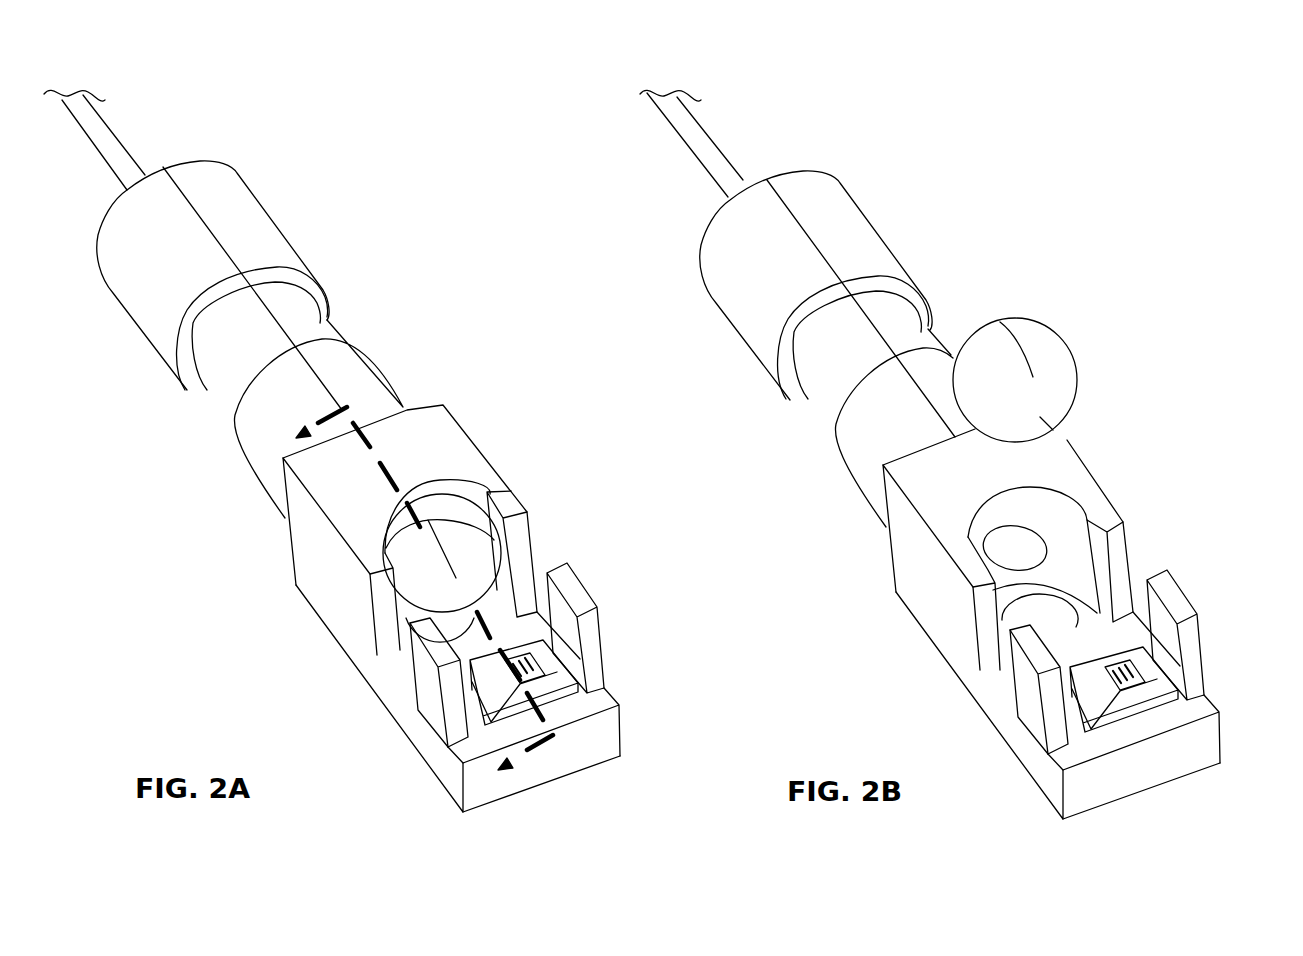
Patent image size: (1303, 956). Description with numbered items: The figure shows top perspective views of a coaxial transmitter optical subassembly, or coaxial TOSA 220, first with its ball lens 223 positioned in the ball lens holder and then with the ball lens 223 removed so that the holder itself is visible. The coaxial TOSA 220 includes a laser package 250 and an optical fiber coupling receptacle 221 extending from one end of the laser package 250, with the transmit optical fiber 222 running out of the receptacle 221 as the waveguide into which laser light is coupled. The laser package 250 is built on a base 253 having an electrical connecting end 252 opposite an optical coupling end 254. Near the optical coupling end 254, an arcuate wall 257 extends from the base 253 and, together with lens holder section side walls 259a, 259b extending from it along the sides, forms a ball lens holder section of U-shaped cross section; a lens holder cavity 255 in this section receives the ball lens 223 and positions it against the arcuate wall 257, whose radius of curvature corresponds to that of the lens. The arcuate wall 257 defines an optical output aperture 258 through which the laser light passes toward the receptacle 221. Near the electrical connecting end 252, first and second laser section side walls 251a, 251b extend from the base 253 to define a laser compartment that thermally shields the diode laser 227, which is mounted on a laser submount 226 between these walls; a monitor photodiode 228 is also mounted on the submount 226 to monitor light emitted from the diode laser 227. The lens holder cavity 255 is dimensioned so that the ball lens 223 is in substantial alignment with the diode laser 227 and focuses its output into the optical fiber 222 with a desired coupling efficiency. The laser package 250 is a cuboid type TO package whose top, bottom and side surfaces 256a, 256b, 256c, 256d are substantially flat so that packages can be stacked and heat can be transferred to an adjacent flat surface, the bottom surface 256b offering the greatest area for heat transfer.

In FIG. 2A, the coaxial TOSA 220 is at (437, 222).
In FIG. 2B, the coaxial TOSA 220 is at (1046, 236).
In FIG. 2A, the optical fiber coupling receptacle 221 is at (292, 224).
In FIG. 2B, the optical fiber coupling receptacle 221 is at (839, 304).
In FIG. 2A, the transmit optical fiber 222 is at (112, 141).
In FIG. 2B, the transmit optical fiber 222 is at (717, 143).
In FIG. 2A, the ball lens 223 is at (474, 537).
In FIG. 2B, the ball lens 223 is at (1033, 341).
In FIG. 2A, the laser submount 226 is at (539, 695).
In FIG. 2B, the laser submount 226 is at (1167, 735).
In FIG. 2A, the diode laser 227 is at (498, 662).
In FIG. 2B, the diode laser 227 is at (1184, 670).
In FIG. 2A, the monitor photodiode 228 is at (540, 695).
In FIG. 2B, the monitor photodiode 228 is at (1166, 732).
In FIG. 2A, the laser package 250 is at (452, 620).
In FIG. 2B, the laser package 250 is at (1027, 642).
In FIG. 2A, the first laser section side wall 251a is at (422, 633).
In FIG. 2B, the first laser section side wall 251a is at (991, 689).
In FIG. 2A, the second laser section side wall 251b is at (570, 580).
In FIG. 2B, the second laser section side wall 251b is at (1195, 615).
In FIG. 2A, the electrical connecting end 252 is at (648, 763).
In FIG. 2B, the electrical connecting end 252 is at (1134, 775).
In FIG. 2A, the base 253 is at (430, 760).
In FIG. 2B, the base 253 is at (979, 719).
In FIG. 2A, the optical coupling end 254 is at (268, 562).
In FIG. 2B, the optical coupling end 254 is at (871, 528).
In FIG. 2B, the lens holder cavity 255 is at (1011, 605).
In FIG. 2A, the top surface 256a is at (430, 432).
In FIG. 2B, the top surface 256a is at (1005, 462).
In FIG. 2A, the bottom surface 256b is at (437, 797).
In FIG. 2B, the bottom surface 256b is at (1127, 822).
In FIG. 2A, the side surface 256c is at (430, 697).
In FIG. 2B, the side surface 256c is at (981, 692).
In FIG. 2A, the side surface 256d is at (606, 602).
In FIG. 2B, the side surface 256d is at (1209, 608).
In FIG. 2A, the arcuate wall 257 is at (428, 498).
In FIG. 2B, the arcuate wall 257 is at (1027, 494).
In FIG. 2B, the optical output aperture 258 is at (995, 522).
In FIG. 2A, the lens holder section side wall 259a is at (384, 597).
In FIG. 2B, the lens holder section side wall 259a is at (947, 603).
In FIG. 2A, the lens holder section side wall 259b is at (522, 548).
In FIG. 2B, the lens holder section side wall 259b is at (1143, 561).